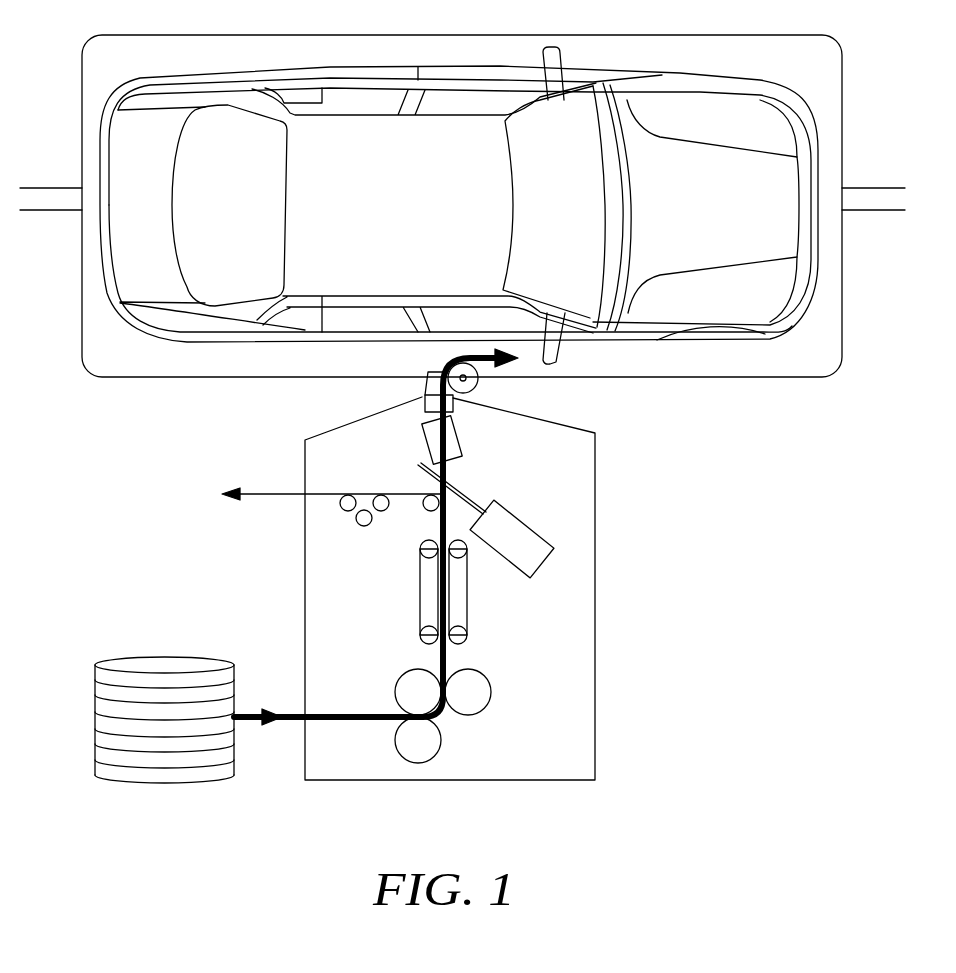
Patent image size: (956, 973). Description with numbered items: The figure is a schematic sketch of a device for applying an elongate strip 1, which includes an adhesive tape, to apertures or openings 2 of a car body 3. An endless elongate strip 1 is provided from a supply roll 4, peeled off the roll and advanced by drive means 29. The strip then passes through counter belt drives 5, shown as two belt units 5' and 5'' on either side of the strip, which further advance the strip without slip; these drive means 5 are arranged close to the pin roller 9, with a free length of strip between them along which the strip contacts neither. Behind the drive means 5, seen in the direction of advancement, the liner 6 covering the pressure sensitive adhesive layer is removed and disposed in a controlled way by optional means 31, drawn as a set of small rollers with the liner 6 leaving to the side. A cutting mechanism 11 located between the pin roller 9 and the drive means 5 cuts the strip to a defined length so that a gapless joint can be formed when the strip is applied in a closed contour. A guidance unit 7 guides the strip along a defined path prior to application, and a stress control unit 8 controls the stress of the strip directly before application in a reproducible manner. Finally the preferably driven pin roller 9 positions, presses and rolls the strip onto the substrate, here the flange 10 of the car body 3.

The elongate strip 1 is at (337, 722).
The aperture 2 is at (340, 318).
The car body 3 is at (710, 220).
The supply roll 4 is at (173, 781).
The counter belt drives 5 is at (475, 595).
The counter belt drive 5' is at (402, 592).
The counter belt drive 5'' is at (489, 592).
The liner 6 is at (273, 495).
The guidance unit 7 is at (455, 405).
The stress control unit 8 is at (413, 440).
The pin roller 9 is at (482, 372).
The flange 10 is at (167, 110).
The cutting mechanism 11 is at (537, 552).
The drive means 29 is at (418, 755).
The means for removing and disposing liner 31 is at (429, 509).